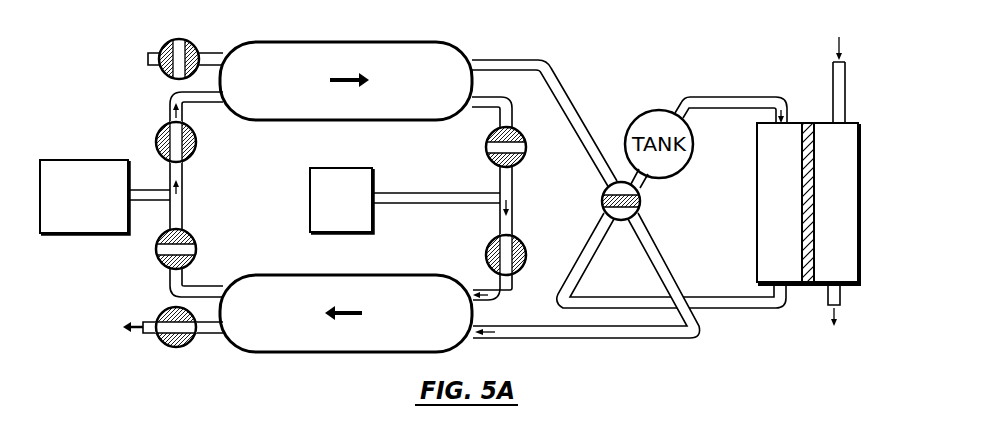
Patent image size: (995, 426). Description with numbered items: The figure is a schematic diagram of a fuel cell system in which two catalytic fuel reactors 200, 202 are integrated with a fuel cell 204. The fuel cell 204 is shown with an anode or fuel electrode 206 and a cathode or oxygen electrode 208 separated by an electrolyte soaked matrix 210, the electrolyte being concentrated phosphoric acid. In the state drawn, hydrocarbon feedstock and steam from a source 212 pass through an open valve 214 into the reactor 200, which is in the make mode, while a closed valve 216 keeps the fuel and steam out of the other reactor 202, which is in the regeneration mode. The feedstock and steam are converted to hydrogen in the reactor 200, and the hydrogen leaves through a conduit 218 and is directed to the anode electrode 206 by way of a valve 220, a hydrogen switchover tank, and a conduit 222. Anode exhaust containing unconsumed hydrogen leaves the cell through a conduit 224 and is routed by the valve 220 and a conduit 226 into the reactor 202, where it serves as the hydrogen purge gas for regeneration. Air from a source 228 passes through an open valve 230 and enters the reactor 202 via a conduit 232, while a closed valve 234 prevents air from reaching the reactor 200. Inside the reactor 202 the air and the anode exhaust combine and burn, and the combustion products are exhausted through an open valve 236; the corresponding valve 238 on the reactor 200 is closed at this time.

The fuel reactor 200 is at (300, 83).
The fuel reactor 202 is at (288, 316).
The fuel cell 204 is at (823, 191).
The anode or fuel electrode 206 is at (757, 200).
The cathode or oxygen electrode 208 is at (860, 200).
The electrolyte soaked matrix 210 is at (807, 122).
The source 212 is at (68, 158).
The valve 214 is at (196, 143).
The valve 216 is at (196, 246).
The conduit 218 is at (508, 60).
The valve 220 is at (641, 203).
The conduit 222 is at (760, 96).
The conduit 224 is at (735, 299).
The conduit 226 is at (597, 336).
The source 228 is at (338, 167).
The valve 230 is at (527, 253).
The conduit 232 is at (512, 291).
The valve 234 is at (523, 163).
The valve 236 is at (168, 346).
The valve 238 is at (166, 46).